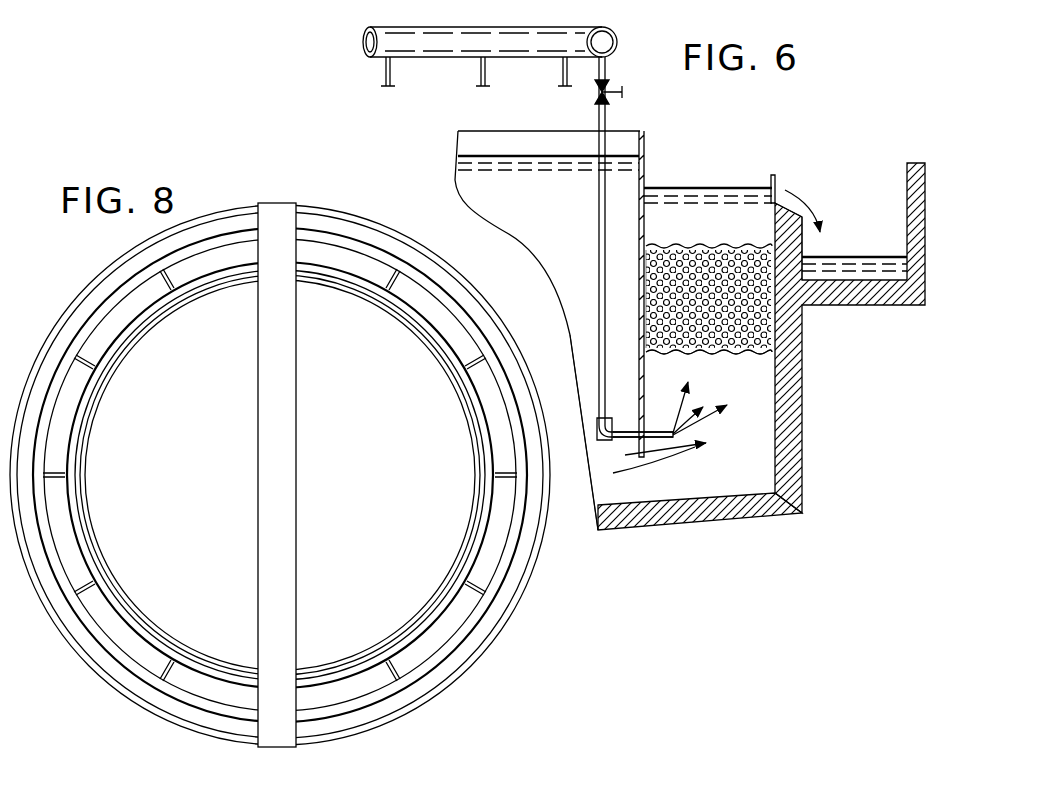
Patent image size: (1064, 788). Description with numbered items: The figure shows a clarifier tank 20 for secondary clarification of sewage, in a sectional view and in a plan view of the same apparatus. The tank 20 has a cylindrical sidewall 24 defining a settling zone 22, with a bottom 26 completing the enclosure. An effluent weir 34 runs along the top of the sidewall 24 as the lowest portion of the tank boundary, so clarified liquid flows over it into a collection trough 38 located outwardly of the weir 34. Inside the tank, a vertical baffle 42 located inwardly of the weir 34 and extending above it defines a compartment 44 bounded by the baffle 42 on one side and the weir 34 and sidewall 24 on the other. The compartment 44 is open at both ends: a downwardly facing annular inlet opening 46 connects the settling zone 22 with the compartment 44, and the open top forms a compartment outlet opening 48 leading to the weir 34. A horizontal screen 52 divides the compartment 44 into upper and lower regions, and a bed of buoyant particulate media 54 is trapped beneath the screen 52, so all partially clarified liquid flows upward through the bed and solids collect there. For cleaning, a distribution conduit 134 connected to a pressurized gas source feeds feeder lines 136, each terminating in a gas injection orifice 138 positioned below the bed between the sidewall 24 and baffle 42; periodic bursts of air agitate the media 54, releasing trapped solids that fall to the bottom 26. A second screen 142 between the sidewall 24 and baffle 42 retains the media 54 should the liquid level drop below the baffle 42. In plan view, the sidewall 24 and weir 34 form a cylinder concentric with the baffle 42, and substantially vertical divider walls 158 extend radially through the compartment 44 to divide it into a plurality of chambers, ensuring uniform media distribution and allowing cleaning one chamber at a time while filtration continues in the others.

In FIG. 6, the clarifier tank 20 is at (822, 407).
In FIG. 8, the clarifier tank 20 is at (488, 672).
In FIG. 6, the settling zone 22 is at (747, 473).
In FIG. 8, the settling zone 22 is at (173, 398).
In FIG. 6, the sidewall 24 is at (803, 357).
In FIG. 8, the sidewall 24 is at (517, 522).
In FIG. 6, the bottom 26 is at (712, 522).
In FIG. 8, the bottom 26 is at (363, 527).
In FIG. 6, the effluent weir 34 is at (775, 178).
In FIG. 8, the effluent weir 34 is at (493, 557).
In FIG. 6, the liquid collection trough 38 is at (844, 238).
In FIG. 8, the liquid collection trough 38 is at (433, 679).
In FIG. 6, the vertical baffle 42 is at (640, 163).
In FIG. 8, the vertical baffle 42 is at (482, 420).
In FIG. 6, the compartment 44 is at (745, 310).
In FIG. 8, the compartment 44 is at (423, 302).
In FIG. 6, the inlet opening 46 is at (642, 457).
In FIG. 6, the compartment outlet opening 48 is at (728, 187).
In FIG. 6, the screen 52 is at (680, 248).
In FIG. 6, the particulate media 54 is at (680, 308).
In FIG. 6, the distribution conduit 134 is at (578, 27).
In FIG. 8, the distribution conduit 134 is at (423, 347).
In FIG. 6, the feeder lines 136 is at (555, 72).
In FIG. 6, the gas injection orifice 138 is at (675, 436).
In FIG. 6, the screen 142 is at (700, 348).
In FIG. 8, the divider walls 158 is at (78, 580).